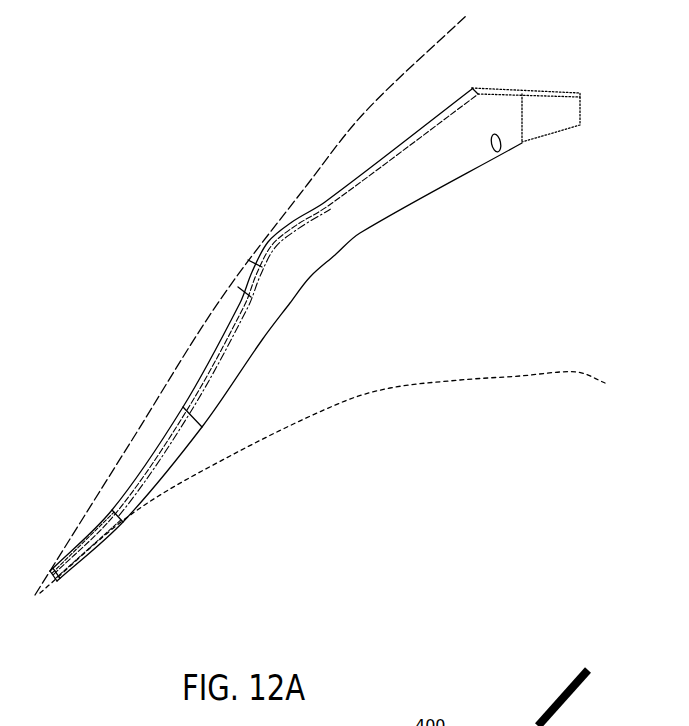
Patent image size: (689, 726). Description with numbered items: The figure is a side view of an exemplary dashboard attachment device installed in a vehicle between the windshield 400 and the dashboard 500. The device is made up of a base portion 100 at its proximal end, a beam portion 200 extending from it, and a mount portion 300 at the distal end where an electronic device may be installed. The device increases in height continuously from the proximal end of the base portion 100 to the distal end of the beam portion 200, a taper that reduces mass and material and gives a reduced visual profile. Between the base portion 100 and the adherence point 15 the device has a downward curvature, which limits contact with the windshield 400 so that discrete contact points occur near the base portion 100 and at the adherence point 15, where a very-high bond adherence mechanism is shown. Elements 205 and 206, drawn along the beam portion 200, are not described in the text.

The adherence point 15 is at (240, 276).
The base portion 100 is at (72, 572).
The beam portion 200 is at (355, 225).
The sheath 205 is at (157, 437).
The button 206 is at (496, 153).
The mount portion 300 is at (552, 88).
The windshield 400 is at (363, 113).
The dashboard 500 is at (387, 390).